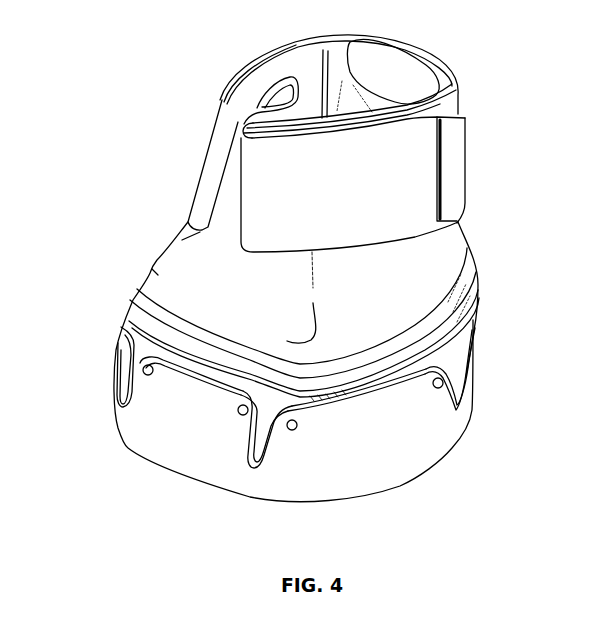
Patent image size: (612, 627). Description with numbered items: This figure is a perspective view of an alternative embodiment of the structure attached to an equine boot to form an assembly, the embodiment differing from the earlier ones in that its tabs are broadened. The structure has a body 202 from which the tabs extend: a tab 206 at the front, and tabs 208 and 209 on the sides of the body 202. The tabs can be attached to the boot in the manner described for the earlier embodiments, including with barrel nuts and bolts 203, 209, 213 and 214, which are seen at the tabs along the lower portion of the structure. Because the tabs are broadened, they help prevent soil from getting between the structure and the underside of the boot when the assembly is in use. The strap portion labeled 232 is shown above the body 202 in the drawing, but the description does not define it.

The body 202 is at (457, 418).
The barrel nut and bolt 203 is at (246, 416).
The front tab 206 is at (185, 410).
The side tab 208 is at (374, 425).
The side tab 209 is at (142, 376).
The barrel nut and bolt 213 is at (297, 429).
The barrel nut and bolt 214 is at (453, 374).
The strap 232 is at (463, 238).